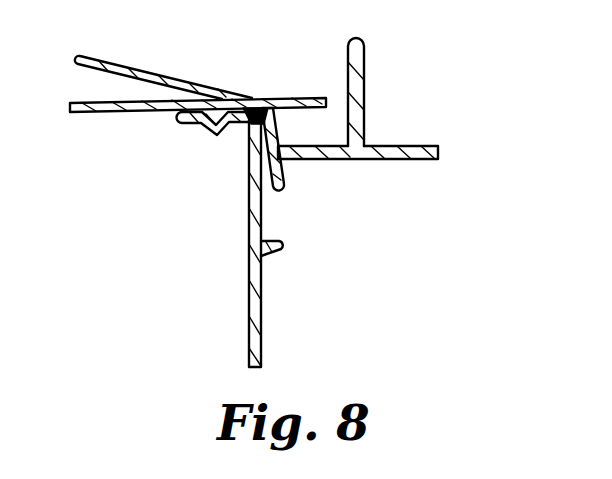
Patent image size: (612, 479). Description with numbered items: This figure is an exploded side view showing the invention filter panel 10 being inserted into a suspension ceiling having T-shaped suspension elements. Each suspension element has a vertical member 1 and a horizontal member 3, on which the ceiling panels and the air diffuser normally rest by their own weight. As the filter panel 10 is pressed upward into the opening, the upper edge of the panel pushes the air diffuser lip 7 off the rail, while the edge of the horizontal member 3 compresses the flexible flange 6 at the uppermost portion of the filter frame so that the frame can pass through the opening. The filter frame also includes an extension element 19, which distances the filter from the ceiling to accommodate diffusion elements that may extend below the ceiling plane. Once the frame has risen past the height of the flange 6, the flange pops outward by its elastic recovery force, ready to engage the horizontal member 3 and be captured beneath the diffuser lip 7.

The vertical member 1 is at (364, 54).
The horizontal member 3 is at (397, 152).
The flexible flange 6 is at (269, 130).
The air diffuser lip 7 is at (288, 99).
The filter panel 10 is at (265, 270).
The extension element 19 is at (249, 213).